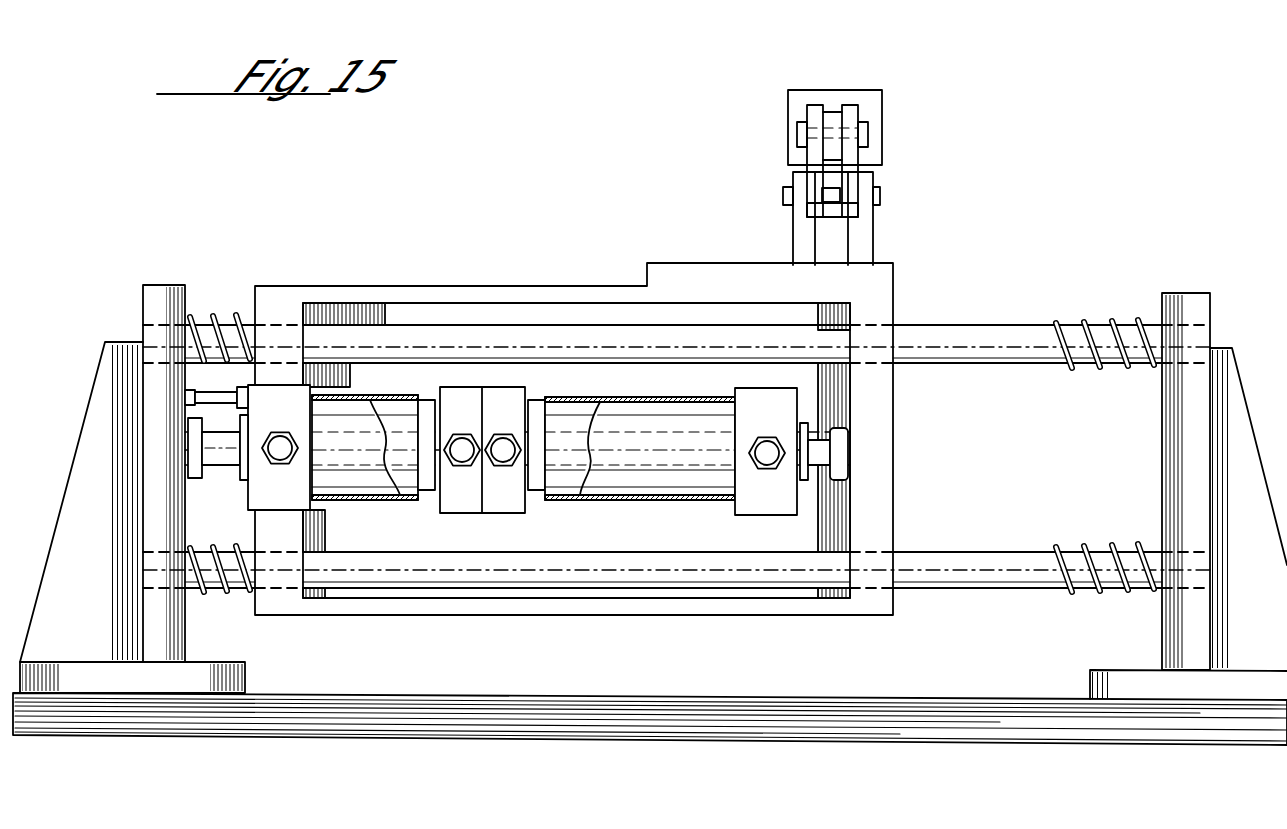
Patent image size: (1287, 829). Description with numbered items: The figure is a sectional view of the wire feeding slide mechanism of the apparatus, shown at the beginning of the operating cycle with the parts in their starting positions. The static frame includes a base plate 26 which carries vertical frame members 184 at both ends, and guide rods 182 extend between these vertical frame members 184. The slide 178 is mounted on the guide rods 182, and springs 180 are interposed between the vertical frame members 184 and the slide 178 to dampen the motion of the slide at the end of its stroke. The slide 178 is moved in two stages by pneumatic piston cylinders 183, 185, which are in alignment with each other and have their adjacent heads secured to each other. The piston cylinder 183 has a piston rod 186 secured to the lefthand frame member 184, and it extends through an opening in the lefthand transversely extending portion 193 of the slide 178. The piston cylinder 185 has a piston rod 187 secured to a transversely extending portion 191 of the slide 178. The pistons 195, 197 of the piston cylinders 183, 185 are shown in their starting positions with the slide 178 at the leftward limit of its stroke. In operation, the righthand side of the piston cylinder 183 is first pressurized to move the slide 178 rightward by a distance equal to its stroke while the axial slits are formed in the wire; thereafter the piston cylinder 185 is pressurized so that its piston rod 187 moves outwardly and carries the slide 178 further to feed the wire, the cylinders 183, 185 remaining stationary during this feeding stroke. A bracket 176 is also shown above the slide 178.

The base plate 26 is at (585, 741).
The mounting bracket with clevis 176 is at (862, 238).
The slide 178 is at (520, 295).
The springs 180 is at (212, 318).
The guide rods 182 is at (600, 330).
The piston cylinder 183 is at (368, 490).
The vertical frame members 184 is at (148, 517).
The piston cylinder 185 is at (631, 487).
The piston rod 186 is at (220, 455).
The piston rod 187 is at (818, 460).
The transversely extending portion 191 is at (878, 413).
The lefthand transversely extending portion 193 is at (275, 367).
The piston 195 is at (428, 412).
The piston 197 is at (540, 408).